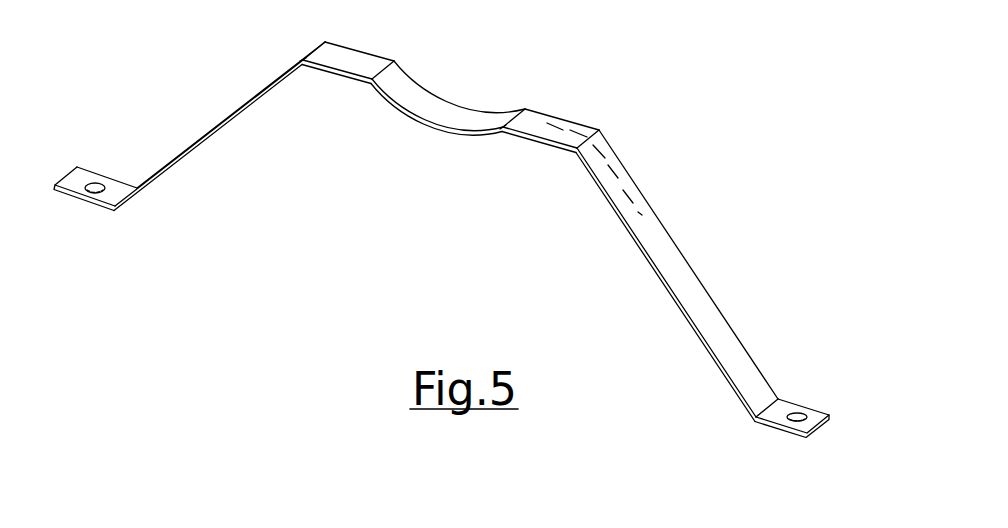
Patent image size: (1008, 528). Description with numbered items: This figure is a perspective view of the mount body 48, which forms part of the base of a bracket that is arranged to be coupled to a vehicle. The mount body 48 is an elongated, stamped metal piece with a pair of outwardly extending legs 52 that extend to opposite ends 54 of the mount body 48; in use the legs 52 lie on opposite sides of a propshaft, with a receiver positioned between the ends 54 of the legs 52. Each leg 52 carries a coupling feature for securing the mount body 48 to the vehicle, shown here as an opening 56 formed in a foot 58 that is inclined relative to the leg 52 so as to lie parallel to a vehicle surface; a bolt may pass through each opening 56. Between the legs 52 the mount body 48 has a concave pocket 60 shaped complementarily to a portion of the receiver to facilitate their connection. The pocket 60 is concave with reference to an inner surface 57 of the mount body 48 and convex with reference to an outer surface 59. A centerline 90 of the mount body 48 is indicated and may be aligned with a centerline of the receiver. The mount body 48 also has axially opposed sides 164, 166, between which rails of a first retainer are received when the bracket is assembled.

The mount body 48 is at (668, 151).
The leg 52 is at (200, 145).
The end 54 is at (822, 424).
The opening 56 is at (100, 187).
The inner surface 57 is at (342, 50).
The foot 58 is at (70, 184).
The outer surface 59 is at (345, 84).
The concave pocket 60 is at (432, 103).
The centerline 90 is at (620, 182).
The axially opposed side 164 is at (523, 135).
The axially opposed side 166 is at (555, 105).